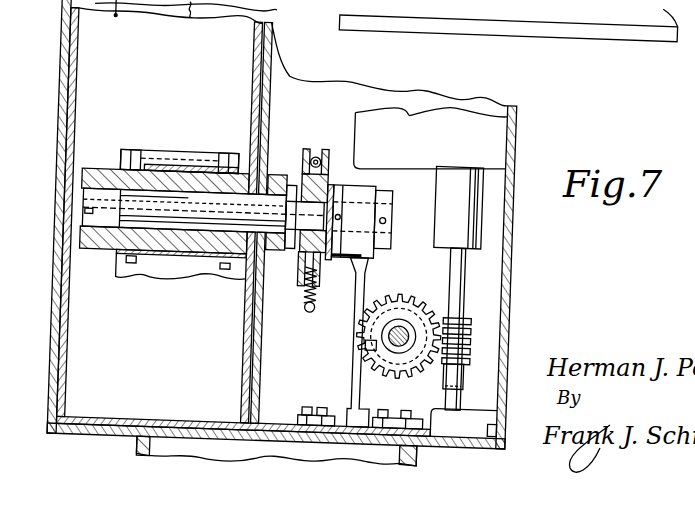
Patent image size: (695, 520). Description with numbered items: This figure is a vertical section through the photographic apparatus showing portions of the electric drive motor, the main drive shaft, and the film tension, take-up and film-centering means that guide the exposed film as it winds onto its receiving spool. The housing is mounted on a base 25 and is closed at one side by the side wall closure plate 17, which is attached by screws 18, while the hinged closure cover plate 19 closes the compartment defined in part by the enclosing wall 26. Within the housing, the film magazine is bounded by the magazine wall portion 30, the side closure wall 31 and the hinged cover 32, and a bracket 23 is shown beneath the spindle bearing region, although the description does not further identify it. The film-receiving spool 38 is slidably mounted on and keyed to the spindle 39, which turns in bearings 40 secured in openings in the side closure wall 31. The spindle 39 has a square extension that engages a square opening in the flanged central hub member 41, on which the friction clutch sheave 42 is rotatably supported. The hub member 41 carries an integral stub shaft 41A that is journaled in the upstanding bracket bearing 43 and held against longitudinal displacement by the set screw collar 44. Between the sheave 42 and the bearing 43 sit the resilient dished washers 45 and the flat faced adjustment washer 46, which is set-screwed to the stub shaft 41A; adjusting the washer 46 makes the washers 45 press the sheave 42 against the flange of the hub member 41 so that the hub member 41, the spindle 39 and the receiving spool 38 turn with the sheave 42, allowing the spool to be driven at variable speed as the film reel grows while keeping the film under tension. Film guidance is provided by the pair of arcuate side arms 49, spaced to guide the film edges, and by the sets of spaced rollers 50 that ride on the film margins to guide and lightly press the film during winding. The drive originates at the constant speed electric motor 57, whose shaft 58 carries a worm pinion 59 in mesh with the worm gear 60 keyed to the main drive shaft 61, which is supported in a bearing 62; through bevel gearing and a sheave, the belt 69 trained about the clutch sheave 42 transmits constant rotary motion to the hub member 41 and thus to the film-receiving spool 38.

The side wall closure plate 17 is at (505, 207).
The screws 18 is at (497, 414).
The closure cover plate 19 is at (47, 59).
The bracket 23 is at (132, 270).
The base 25 is at (330, 0).
The enclosing wall 26 is at (254, 86).
The magazine wall portion 30 is at (189, 413).
The side closure wall 31 is at (244, 103).
The cover 32 is at (57, 77).
The film-receiving spool 38 is at (76, 168).
The spindle 39 is at (77, 208).
The bearings 40 is at (265, 167).
The flanged central hub member 41 is at (294, 172).
The stub shaft 41A is at (364, 184).
The friction clutch sheave 42 is at (296, 258).
The bracket bearing 43 is at (352, 174).
The set screw collar 44 is at (385, 200).
The resilient dished washers 45 is at (322, 176).
The adjustment washer 46 is at (336, 250).
The arcuate side arms 49 is at (112, 147).
The rollers 50 is at (122, 146).
The electric motor 57 is at (472, 121).
The shaft 58 is at (450, 267).
The worm pinion 59 is at (468, 318).
The worm gear 60 is at (414, 289).
The main drive shaft 61 is at (388, 325).
The bearing 62 is at (380, 336).
The belt 69 is at (300, 296).